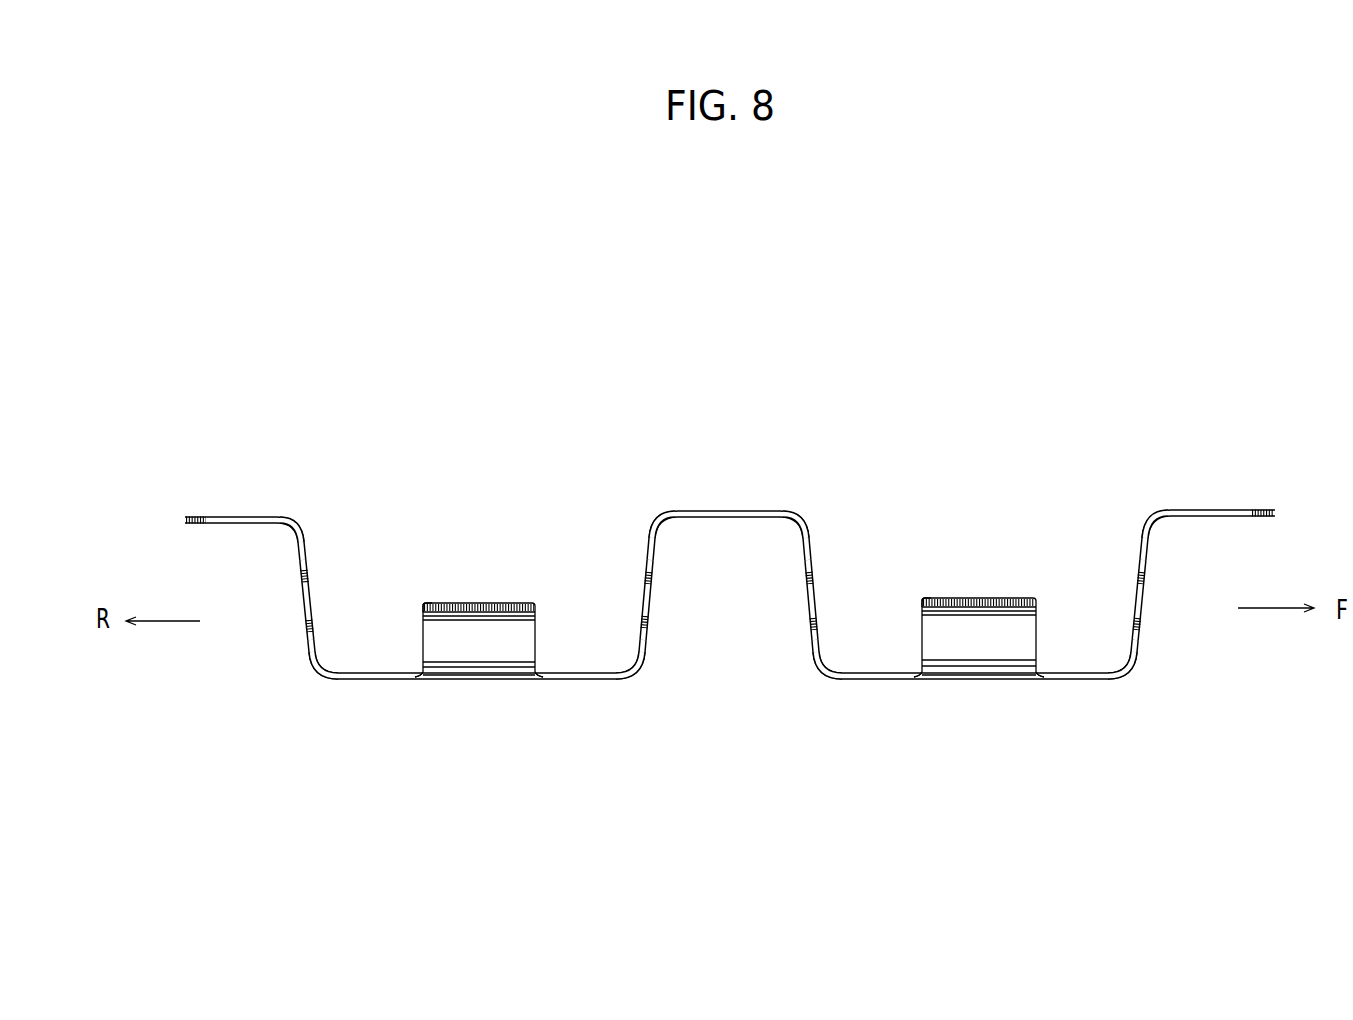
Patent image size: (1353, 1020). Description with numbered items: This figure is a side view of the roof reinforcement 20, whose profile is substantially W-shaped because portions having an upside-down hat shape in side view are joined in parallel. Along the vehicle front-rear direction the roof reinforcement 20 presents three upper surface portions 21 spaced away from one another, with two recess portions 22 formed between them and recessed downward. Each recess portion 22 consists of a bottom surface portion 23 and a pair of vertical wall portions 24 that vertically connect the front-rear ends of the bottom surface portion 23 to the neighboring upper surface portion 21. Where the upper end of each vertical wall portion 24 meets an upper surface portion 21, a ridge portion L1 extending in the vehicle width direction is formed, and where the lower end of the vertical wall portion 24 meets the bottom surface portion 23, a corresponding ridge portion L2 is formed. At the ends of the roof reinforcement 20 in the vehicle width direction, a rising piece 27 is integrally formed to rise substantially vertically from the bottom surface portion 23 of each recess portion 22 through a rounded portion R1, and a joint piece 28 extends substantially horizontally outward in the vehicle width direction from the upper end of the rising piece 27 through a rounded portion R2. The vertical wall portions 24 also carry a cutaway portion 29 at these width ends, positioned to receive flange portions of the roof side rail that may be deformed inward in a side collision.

The roof reinforcement 20 is at (731, 426).
The upper surface portion 21 is at (205, 515).
The recess portion 22 is at (295, 641).
The bottom surface portion 23 is at (384, 686).
The vertical wall portion 24 is at (308, 549).
The rising piece 27 is at (514, 634).
The joint piece 28 is at (461, 602).
The cutaway portion 29 is at (298, 596).
The ridge portion L1 is at (290, 517).
The ridge portion L2 is at (318, 666).
The rounded portion R1 is at (480, 682).
The rounded portion R2 is at (425, 612).